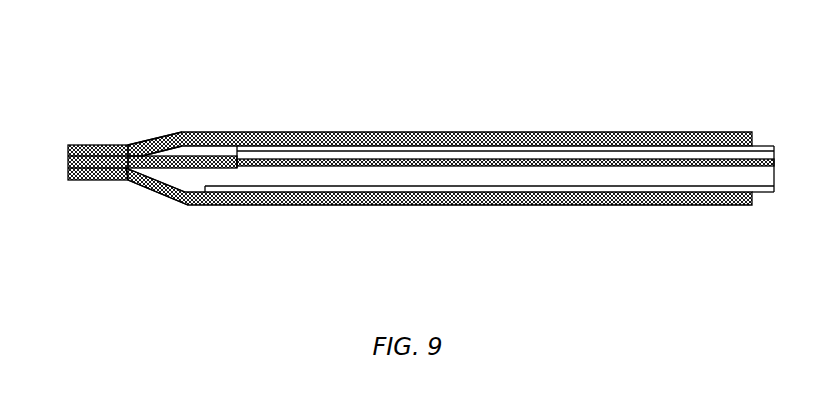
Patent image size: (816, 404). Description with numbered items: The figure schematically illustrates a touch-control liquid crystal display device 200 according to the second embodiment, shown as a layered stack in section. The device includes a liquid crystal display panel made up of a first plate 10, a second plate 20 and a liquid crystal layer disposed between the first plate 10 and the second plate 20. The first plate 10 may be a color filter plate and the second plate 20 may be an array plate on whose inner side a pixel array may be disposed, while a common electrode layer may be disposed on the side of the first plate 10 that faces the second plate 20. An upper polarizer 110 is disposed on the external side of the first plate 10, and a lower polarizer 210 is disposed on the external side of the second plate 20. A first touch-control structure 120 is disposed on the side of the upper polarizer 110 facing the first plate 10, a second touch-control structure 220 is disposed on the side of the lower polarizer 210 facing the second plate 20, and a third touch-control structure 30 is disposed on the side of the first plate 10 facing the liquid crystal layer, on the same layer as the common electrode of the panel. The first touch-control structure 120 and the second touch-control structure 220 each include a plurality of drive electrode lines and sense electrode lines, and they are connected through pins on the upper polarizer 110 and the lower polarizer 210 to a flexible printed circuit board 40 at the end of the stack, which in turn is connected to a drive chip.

The touch-control liquid crystal display device 200 is at (665, 37).
The first plate 10 is at (335, 133).
The upper polarizer 110 is at (195, 133).
The first touch-control structure 120 is at (264, 148).
The second plate 20 is at (423, 186).
The lower polarizer 210 is at (203, 188).
The second touch-control structure 220 is at (261, 187).
The third touch-control structure 30 is at (750, 160).
The flexible printed circuit board 40 is at (83, 150).